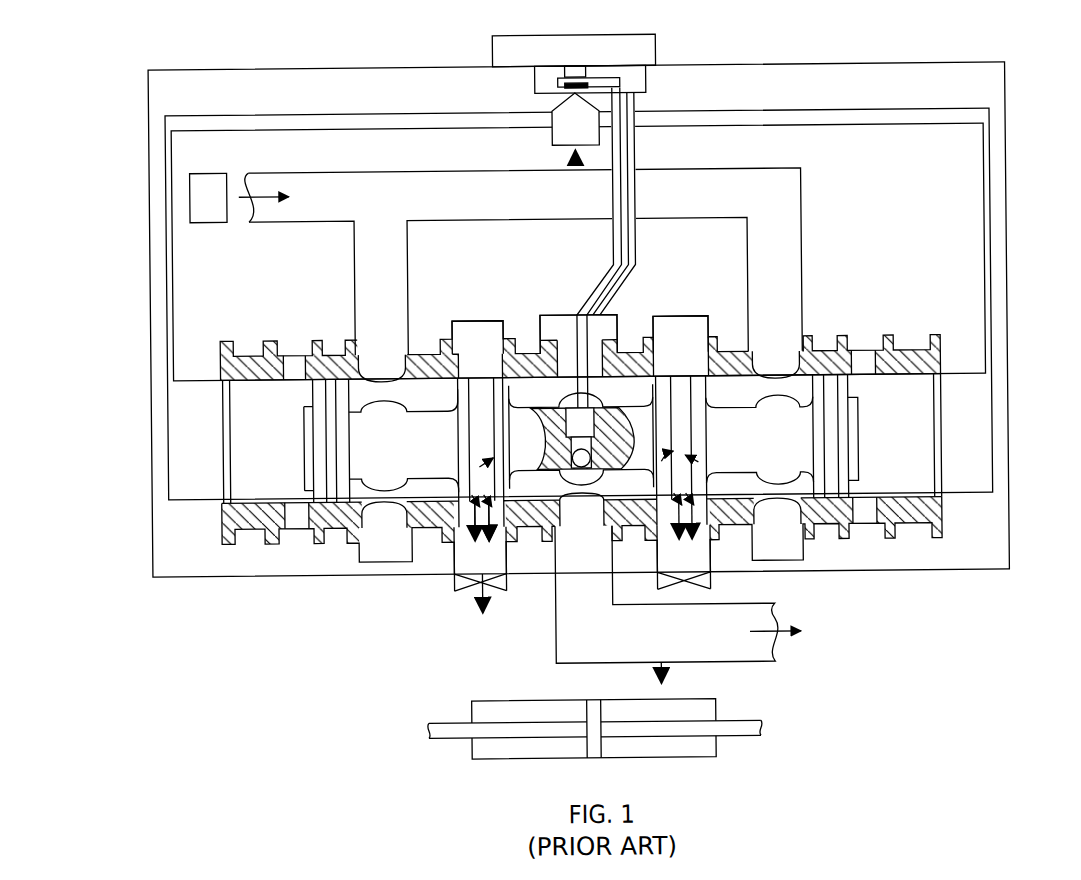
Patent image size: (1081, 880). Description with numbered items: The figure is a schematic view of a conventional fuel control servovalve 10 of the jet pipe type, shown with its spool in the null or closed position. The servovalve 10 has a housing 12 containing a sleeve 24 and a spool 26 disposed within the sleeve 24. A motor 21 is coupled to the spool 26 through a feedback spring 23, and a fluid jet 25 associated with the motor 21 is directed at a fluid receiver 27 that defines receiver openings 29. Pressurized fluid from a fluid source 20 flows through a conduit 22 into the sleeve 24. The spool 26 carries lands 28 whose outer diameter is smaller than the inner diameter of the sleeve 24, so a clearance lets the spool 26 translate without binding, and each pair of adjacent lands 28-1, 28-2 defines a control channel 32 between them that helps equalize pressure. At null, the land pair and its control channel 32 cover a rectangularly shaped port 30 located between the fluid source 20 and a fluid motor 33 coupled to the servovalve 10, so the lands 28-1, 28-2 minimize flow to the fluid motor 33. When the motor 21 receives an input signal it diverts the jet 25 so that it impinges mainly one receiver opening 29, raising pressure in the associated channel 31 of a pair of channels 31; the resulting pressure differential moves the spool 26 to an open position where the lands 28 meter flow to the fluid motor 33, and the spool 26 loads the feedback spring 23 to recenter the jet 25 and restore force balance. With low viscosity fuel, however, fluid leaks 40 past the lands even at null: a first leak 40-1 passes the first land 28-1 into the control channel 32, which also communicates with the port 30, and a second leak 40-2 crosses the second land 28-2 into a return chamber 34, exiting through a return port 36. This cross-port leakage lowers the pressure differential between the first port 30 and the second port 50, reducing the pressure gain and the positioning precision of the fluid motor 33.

The fuel control servovalve 10 is at (172, 608).
The housing 12 is at (150, 84).
The pressurized fluid source 20 is at (191, 186).
The motor 21 is at (498, 47).
The conduit 22 is at (355, 265).
The feedback spring 23 is at (637, 149).
The sleeve 24 is at (221, 342).
The fluid jet 25 is at (562, 82).
The spool 26 is at (303, 404).
The fluid receiver 27 is at (553, 133).
The lands 28 is at (438, 493).
The first land 28-1 is at (465, 383).
The second land 28-2 is at (507, 375).
The receiver openings 29 is at (577, 160).
The port 30 is at (457, 500).
The channel 31 is at (167, 247).
The control channel 32 is at (481, 392).
The fluid motor 33 is at (694, 758).
The return chamber 34 is at (633, 383).
The return port 36 is at (553, 607).
The fluid leakage 40 is at (449, 437).
The first leakage 40-1 is at (458, 455).
The second leakage 40-2 is at (481, 458).
The second port 50 is at (720, 540).